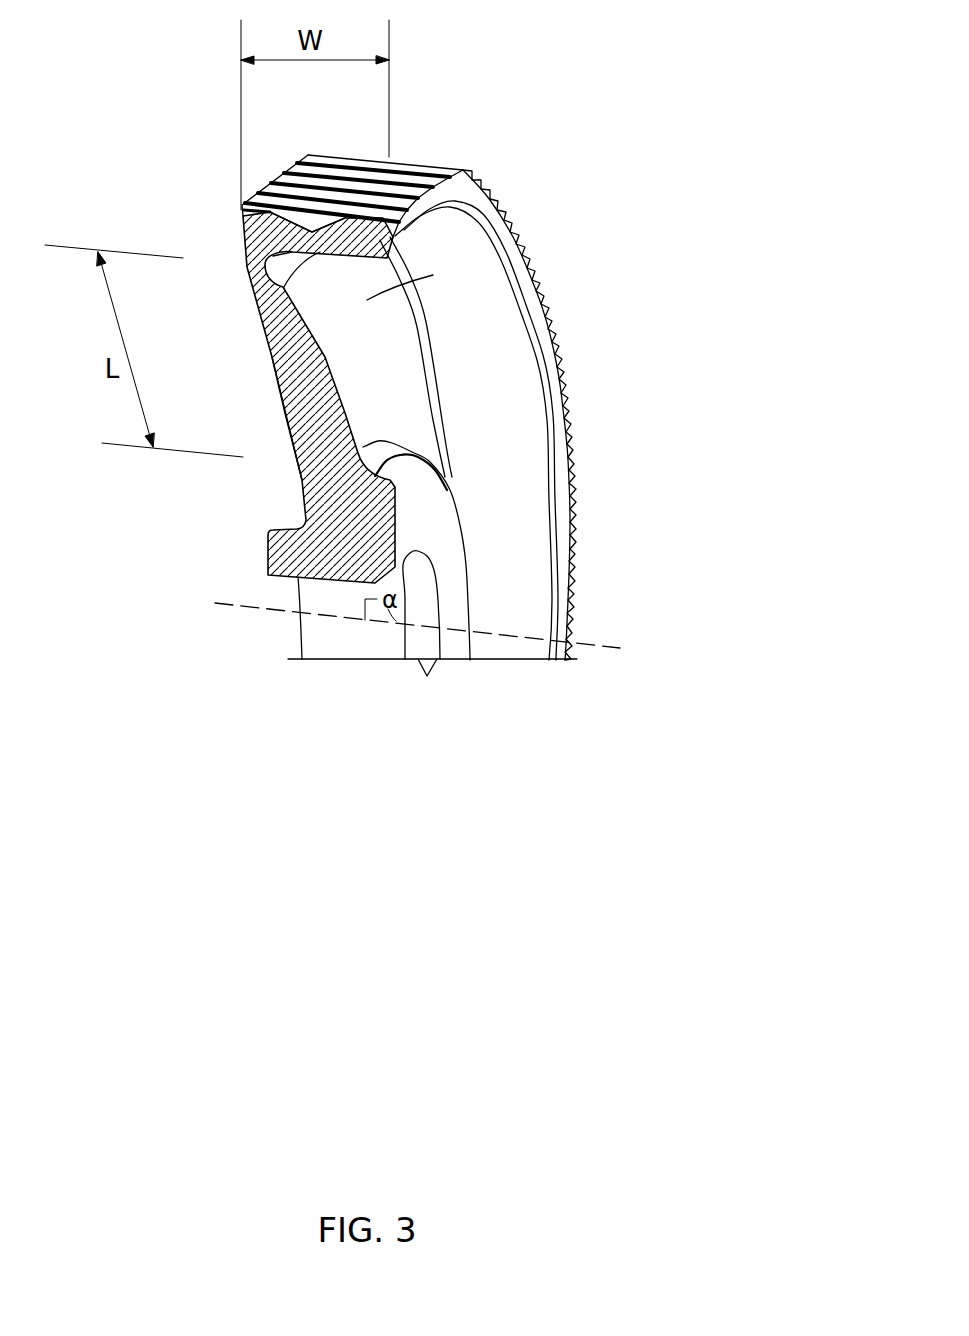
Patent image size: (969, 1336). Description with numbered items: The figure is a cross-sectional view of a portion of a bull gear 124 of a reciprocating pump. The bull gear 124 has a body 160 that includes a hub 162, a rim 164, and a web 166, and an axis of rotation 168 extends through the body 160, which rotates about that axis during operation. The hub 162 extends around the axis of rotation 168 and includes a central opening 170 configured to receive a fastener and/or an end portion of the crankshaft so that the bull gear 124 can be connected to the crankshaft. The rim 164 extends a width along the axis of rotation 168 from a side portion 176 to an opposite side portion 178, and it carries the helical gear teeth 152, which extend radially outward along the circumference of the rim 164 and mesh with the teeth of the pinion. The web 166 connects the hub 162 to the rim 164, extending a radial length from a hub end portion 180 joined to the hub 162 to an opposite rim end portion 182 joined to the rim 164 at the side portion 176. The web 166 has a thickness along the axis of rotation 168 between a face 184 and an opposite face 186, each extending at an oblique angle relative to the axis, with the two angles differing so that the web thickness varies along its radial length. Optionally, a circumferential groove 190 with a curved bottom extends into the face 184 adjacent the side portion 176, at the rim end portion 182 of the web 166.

The bull gear 124 is at (547, 107).
The helical gear teeth 152 is at (342, 157).
The body 160 is at (528, 500).
The hub 162 is at (450, 600).
The rim 164 is at (562, 367).
The web 166 is at (270, 357).
The axis of rotation 168 is at (613, 645).
The central opening 170 is at (348, 645).
The side portion 176 is at (243, 235).
The side portion 178 is at (489, 204).
The hub end portion 180 is at (330, 436).
The rim end portion 182 is at (245, 262).
The face 184 is at (433, 275).
The face 186 is at (287, 415).
The circumferential groove 190 is at (314, 232).